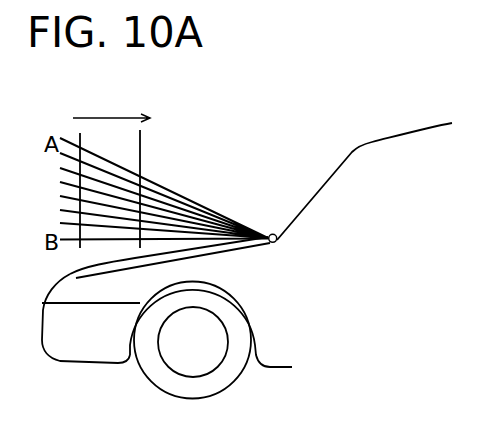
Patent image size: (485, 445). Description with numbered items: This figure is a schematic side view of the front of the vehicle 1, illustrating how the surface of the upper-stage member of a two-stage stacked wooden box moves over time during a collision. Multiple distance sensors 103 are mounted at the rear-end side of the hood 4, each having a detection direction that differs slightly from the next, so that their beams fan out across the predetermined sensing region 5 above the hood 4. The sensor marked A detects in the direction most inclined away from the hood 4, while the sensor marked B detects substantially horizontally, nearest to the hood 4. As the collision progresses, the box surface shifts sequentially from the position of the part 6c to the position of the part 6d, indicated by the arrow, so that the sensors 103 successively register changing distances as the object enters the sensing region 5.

The vehicle 1 is at (330, 173).
The hood 4 is at (103, 265).
The predetermined sensing region 5 is at (168, 208).
The part of upper-stage member 6c is at (62, 223).
The part of upper-stage member 6d is at (141, 153).
The distance sensor 103 is at (271, 233).